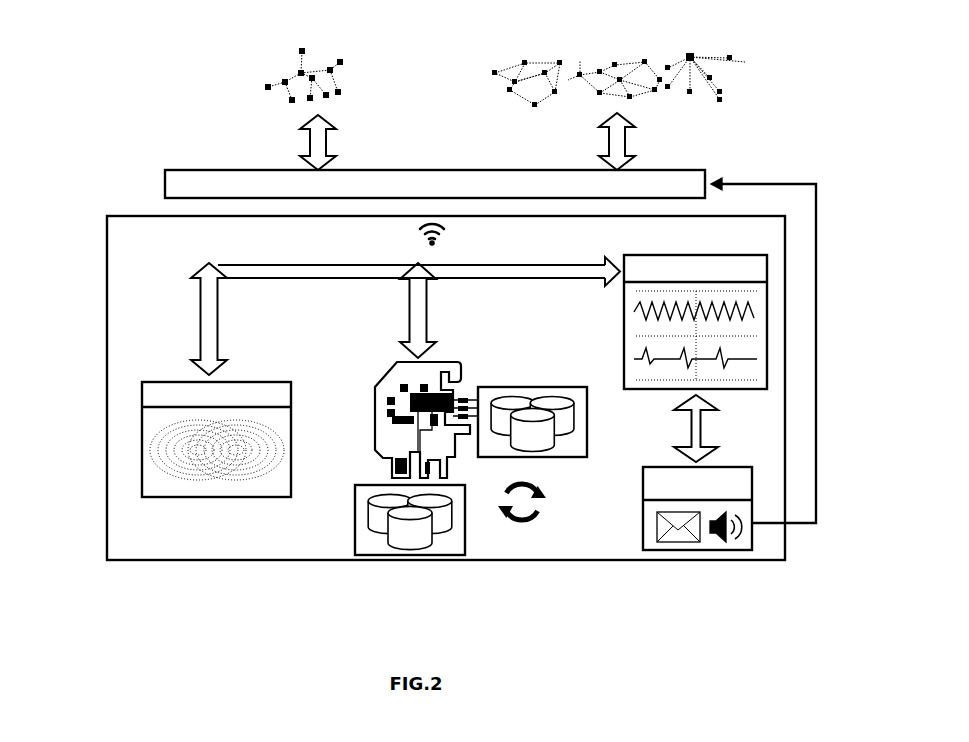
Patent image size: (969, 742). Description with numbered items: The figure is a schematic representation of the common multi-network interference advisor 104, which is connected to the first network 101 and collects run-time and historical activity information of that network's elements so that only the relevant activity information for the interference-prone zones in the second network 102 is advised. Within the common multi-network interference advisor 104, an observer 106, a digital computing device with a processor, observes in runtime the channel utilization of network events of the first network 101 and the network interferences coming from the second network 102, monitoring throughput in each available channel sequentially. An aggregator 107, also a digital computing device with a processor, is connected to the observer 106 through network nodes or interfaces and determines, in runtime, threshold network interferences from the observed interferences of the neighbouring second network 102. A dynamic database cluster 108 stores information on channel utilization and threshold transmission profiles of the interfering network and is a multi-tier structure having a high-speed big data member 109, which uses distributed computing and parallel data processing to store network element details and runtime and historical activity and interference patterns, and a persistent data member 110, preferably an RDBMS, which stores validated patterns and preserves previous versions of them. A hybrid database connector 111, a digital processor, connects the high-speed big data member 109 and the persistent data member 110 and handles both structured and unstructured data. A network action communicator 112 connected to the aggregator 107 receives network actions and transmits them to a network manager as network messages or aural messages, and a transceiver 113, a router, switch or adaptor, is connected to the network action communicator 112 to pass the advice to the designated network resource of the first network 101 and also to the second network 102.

The first network 101 is at (260, 93).
The second network 102 is at (704, 106).
The common multi-network interference advisor 104 is at (107, 316).
The observer 106 is at (216, 439).
The aggregator 107 is at (695, 322).
The dynamic database cluster 108 is at (483, 342).
The high-speed big data member 109 is at (358, 548).
The persistent data member 110 is at (531, 387).
The hybrid database connector 111 is at (388, 388).
The network action communicator 112 is at (697, 508).
The transceiver 113 is at (435, 184).